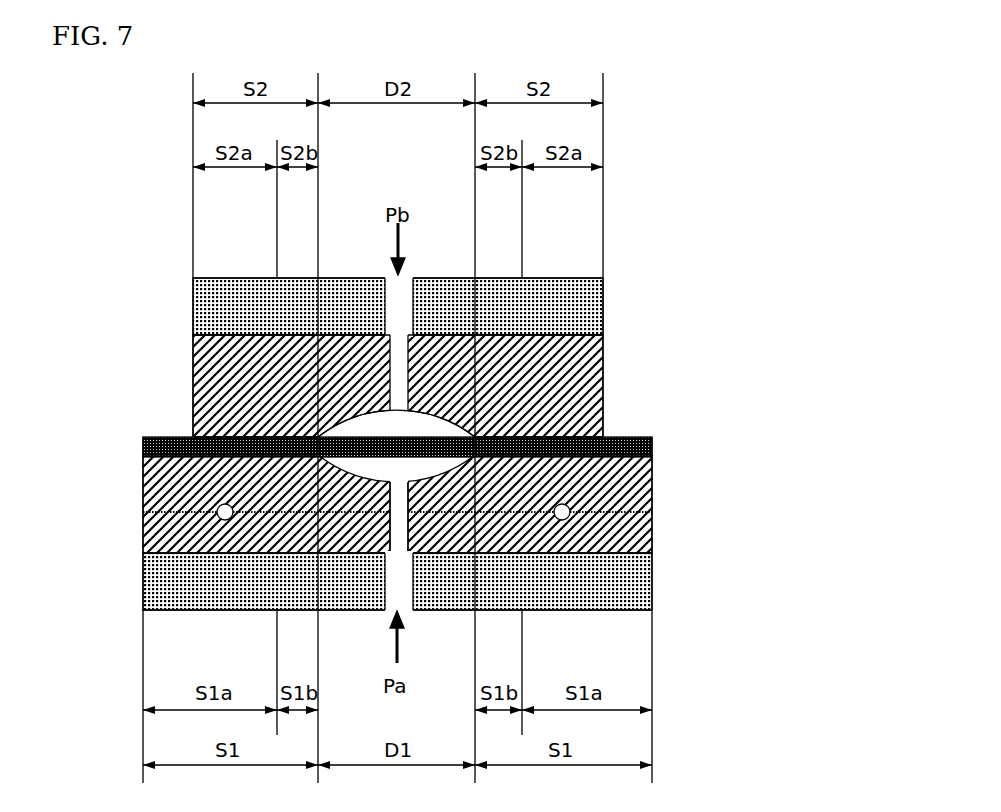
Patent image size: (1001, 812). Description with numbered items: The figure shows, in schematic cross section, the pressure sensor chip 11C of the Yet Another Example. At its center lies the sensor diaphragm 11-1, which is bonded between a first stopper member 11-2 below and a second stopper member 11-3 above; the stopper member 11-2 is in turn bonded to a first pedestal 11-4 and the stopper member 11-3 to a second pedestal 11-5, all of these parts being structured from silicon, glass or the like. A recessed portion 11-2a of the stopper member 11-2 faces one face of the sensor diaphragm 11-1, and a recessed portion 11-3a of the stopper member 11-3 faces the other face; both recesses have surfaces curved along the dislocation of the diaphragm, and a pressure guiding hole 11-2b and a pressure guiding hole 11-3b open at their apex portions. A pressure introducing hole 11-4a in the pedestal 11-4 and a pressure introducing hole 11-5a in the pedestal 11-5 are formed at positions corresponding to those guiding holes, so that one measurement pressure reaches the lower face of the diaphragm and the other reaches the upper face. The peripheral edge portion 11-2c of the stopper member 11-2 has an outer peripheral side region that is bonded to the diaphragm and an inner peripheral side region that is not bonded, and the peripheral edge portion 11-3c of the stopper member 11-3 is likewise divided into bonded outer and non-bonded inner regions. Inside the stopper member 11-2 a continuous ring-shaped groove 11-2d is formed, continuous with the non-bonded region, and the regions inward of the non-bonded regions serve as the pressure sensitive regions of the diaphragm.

The pressure sensor chip 11C is at (842, 240).
The sensor diaphragm 11-1 is at (652, 450).
The first stopper member 11-2 is at (652, 510).
The recessed portion 11-2a is at (428, 581).
The pressure guiding hole 11-2b is at (393, 537).
The peripheral edge portion 11-2c is at (213, 465).
The ring-shaped groove 11-2d is at (223, 520).
The second stopper member 11-3 is at (603, 367).
The recessed portion 11-3a is at (430, 400).
The pressure guiding hole 11-3b is at (400, 395).
The peripheral edge portion 11-3c is at (230, 433).
The first pedestal 11-4 is at (652, 590).
The pressure introducing hole 11-4a is at (390, 590).
The second pedestal 11-5 is at (603, 298).
The pressure introducing hole 11-5a is at (397, 298).